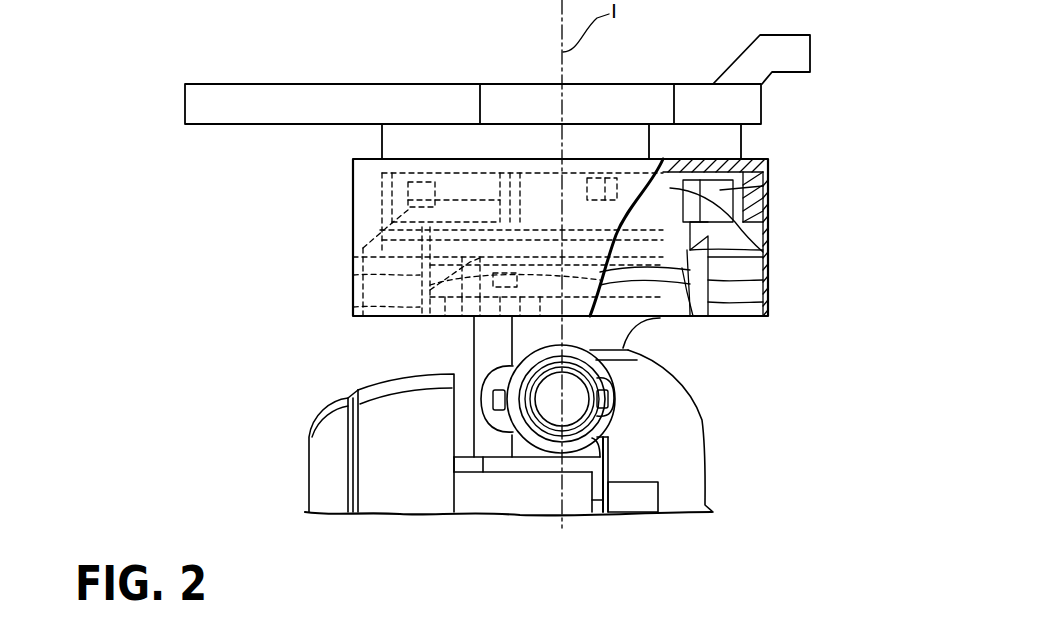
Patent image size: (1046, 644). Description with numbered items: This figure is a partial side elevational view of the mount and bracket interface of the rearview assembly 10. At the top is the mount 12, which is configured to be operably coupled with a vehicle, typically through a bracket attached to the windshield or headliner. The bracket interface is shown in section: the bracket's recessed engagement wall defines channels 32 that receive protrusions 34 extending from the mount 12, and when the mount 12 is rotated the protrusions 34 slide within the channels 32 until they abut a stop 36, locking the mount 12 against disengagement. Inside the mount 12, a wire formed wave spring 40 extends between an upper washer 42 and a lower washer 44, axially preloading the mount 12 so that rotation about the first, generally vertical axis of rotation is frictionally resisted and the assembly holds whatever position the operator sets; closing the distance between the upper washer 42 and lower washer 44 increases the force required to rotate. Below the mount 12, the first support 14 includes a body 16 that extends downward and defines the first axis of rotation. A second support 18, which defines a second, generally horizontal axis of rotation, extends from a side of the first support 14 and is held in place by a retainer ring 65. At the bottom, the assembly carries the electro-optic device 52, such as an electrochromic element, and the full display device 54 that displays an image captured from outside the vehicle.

The rearview assembly 10 is at (893, 128).
The mount 12 is at (768, 177).
The first support 14 is at (660, 318).
The body 16 is at (490, 333).
The second support 18 is at (570, 400).
The channels 32 is at (353, 220).
The protrusions 34 is at (353, 175).
The stop 36 is at (353, 193).
The wave spring 40 is at (353, 280).
The upper washer 42 is at (353, 257).
The lower washer 44 is at (353, 300).
The electro-optic device 52 is at (330, 465).
The full display device 54 is at (356, 485).
The retainer ring 65 is at (614, 392).